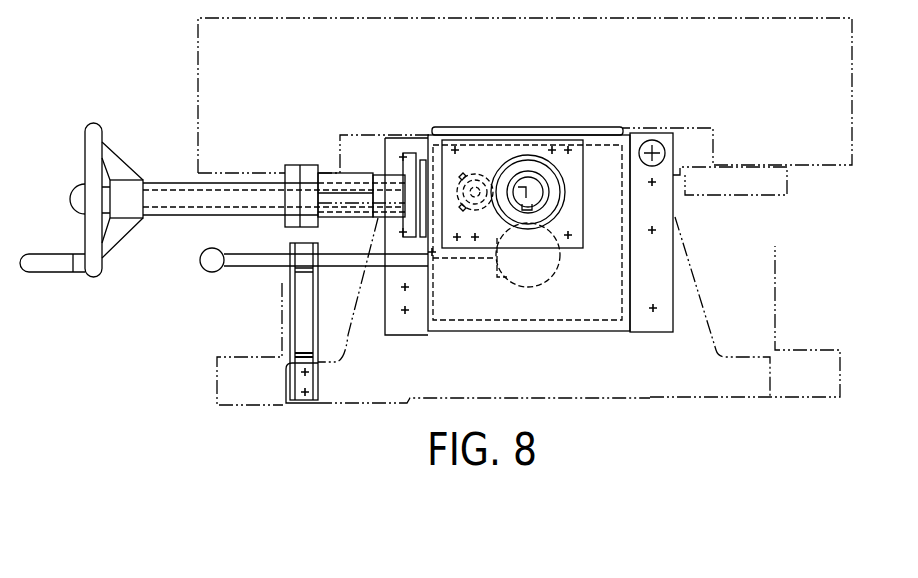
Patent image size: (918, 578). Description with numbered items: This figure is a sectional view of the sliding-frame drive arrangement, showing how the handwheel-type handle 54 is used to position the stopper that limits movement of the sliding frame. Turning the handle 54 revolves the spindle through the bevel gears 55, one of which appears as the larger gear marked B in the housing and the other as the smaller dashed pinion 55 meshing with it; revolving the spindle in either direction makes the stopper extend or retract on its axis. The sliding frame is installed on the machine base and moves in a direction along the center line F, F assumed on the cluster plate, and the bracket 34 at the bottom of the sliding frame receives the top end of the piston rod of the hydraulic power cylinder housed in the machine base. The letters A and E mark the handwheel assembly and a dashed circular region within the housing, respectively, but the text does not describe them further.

The handle 54 is at (81, 170).
The bevel gears 55 is at (468, 158).
The bracket 34 is at (318, 383).
The handwheel assembly A is at (66, 200).
The hole B is at (528, 192).
The eccentric E is at (522, 249).
The center line F is at (183, 262).